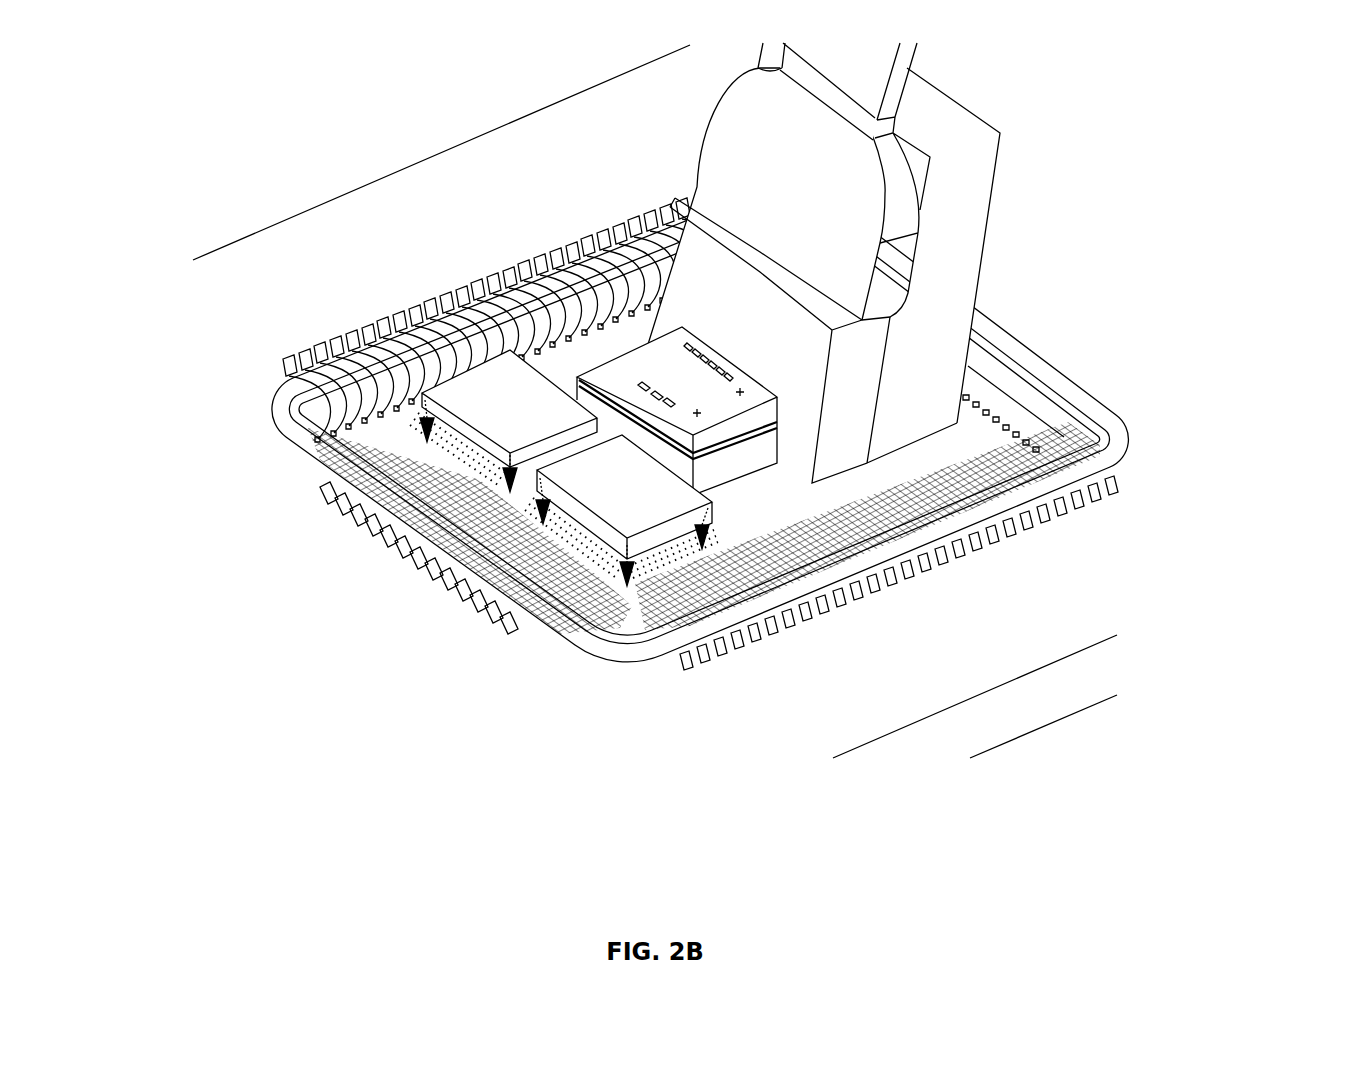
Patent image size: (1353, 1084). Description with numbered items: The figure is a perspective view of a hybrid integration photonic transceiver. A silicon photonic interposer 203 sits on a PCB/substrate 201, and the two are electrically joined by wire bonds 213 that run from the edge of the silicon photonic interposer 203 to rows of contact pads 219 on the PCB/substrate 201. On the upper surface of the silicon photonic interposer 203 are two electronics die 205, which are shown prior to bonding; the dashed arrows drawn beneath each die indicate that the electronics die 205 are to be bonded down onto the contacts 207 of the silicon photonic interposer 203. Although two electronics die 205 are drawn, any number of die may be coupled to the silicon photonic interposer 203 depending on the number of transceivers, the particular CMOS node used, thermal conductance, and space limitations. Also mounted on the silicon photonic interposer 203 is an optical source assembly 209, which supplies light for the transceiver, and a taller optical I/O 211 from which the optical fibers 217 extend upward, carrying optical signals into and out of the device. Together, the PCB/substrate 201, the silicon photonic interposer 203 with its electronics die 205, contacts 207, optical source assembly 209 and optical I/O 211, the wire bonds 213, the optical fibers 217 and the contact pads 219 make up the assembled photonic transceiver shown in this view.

The PCB/substrate 201 is at (298, 588).
The silicon photonic interposer 203 is at (746, 530).
The electronics die 205 is at (491, 415).
The contacts 207 is at (589, 570).
The optical source assembly 209 is at (644, 372).
The optical I/O 211 is at (766, 200).
The wire bonds 213 is at (400, 501).
The optical fibers 217 is at (839, 72).
The contact pads 219 is at (404, 575).